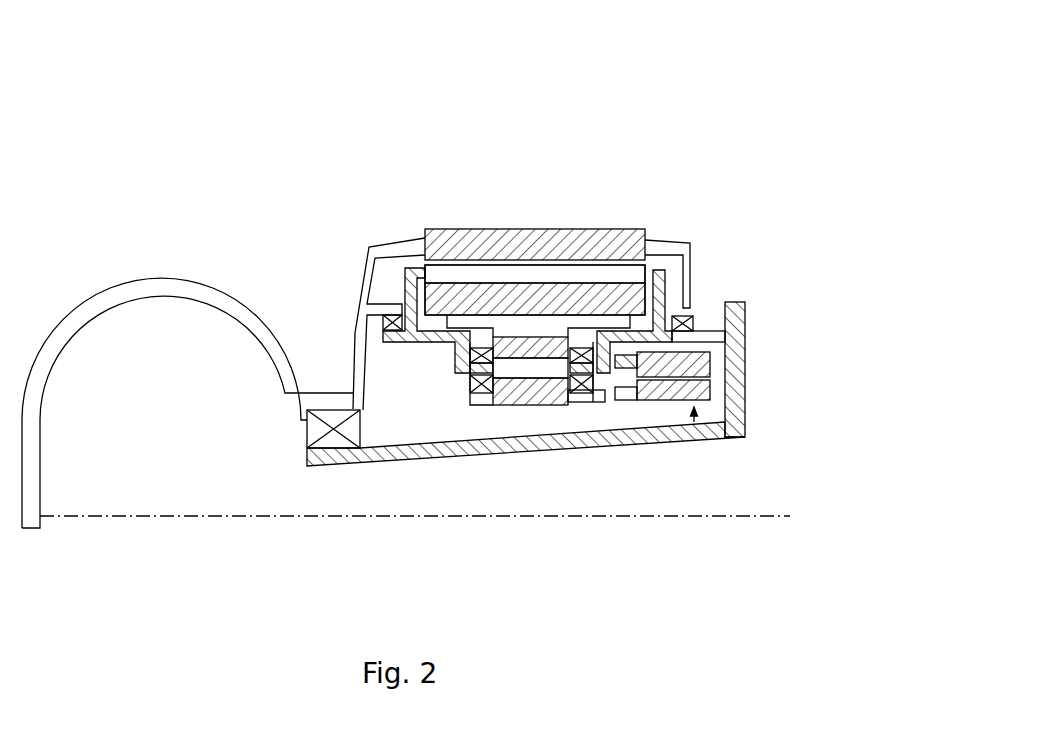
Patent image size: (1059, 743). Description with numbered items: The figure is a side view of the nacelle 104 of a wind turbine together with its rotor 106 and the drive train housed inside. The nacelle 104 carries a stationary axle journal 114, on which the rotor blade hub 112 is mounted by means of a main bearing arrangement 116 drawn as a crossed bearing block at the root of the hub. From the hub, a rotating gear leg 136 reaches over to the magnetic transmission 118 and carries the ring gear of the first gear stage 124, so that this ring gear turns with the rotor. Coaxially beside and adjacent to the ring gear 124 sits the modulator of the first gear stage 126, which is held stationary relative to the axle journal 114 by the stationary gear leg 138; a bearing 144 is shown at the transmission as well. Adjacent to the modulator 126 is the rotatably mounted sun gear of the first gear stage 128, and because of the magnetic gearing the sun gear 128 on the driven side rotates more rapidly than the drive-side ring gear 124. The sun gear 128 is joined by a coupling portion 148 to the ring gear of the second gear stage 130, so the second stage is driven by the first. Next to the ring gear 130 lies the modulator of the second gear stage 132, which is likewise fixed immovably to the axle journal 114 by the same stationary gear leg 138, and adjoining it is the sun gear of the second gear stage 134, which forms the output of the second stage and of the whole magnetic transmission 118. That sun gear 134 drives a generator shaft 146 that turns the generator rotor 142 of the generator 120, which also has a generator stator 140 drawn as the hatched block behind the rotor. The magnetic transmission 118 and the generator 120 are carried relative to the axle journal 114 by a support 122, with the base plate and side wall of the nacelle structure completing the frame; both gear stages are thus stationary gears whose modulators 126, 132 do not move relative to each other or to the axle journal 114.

The nacelle 104 is at (538, 287).
The rotor 106 is at (191, 314).
The rotor blade hub 112 is at (180, 283).
The axle journal 114 is at (640, 443).
The main bearing arrangement 116 is at (313, 432).
The magnetic transmission 118 is at (547, 340).
The generator 120 is at (720, 440).
The support 122 is at (706, 320).
The ring gear of the first gear stage 124 is at (445, 243).
The modulator of the first gear stage 126 is at (535, 237).
The sun gear of the first gear stage 128 is at (548, 300).
The ring gear of the second gear stage 130 is at (552, 338).
The modulator of the second gear stage 132 is at (553, 375).
The sun gear of the second gear stage 134 is at (507, 403).
The rotating gear leg 136 is at (380, 250).
The stationary gear leg 138 is at (660, 270).
The generator stator 140 is at (700, 363).
The generator rotor 142 is at (710, 392).
The bearing 144 is at (360, 330).
The generator shaft 146 is at (613, 416).
The coupling portion 148 is at (512, 283).